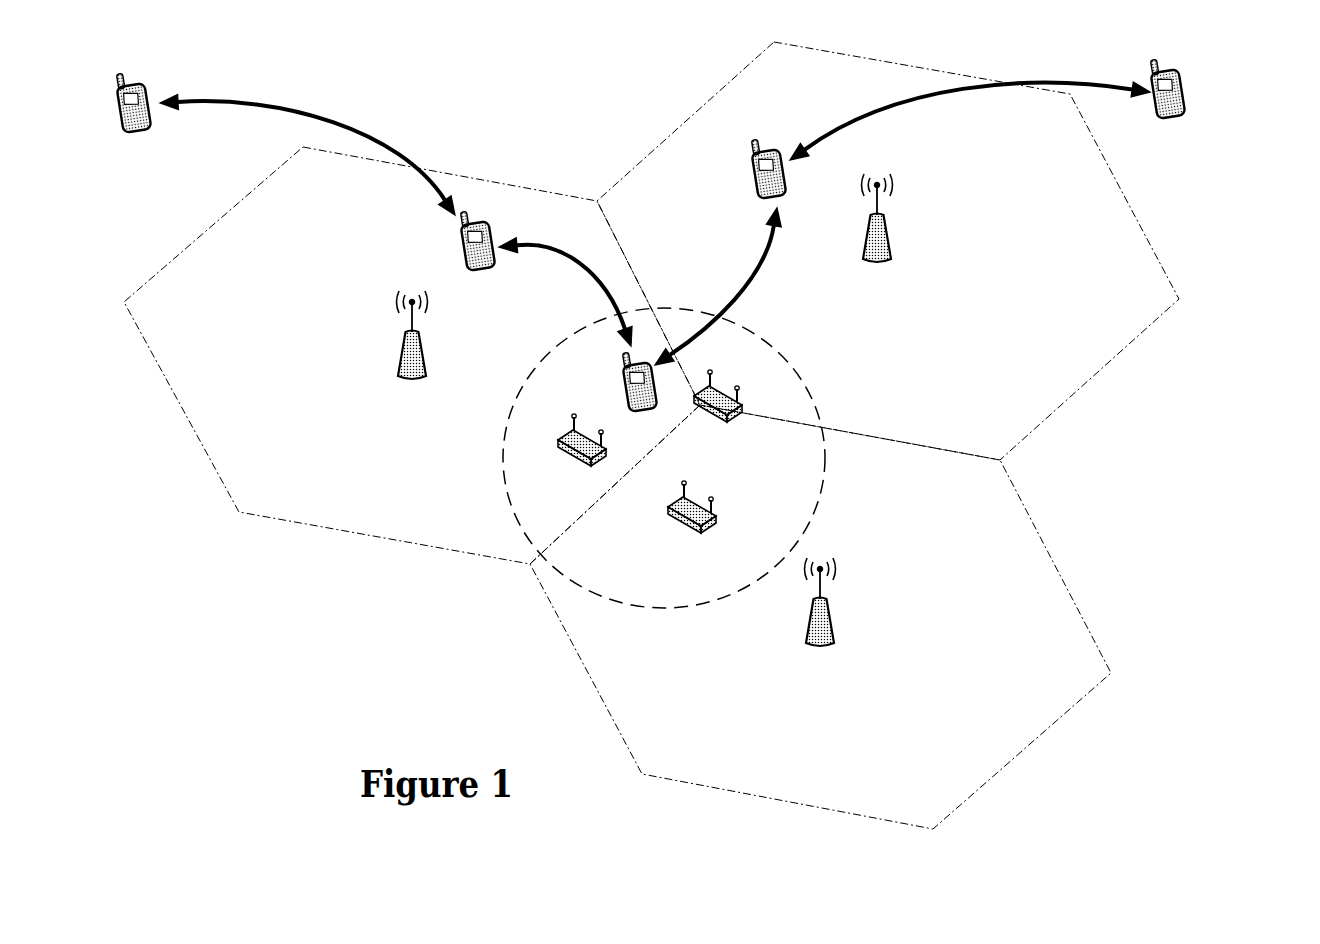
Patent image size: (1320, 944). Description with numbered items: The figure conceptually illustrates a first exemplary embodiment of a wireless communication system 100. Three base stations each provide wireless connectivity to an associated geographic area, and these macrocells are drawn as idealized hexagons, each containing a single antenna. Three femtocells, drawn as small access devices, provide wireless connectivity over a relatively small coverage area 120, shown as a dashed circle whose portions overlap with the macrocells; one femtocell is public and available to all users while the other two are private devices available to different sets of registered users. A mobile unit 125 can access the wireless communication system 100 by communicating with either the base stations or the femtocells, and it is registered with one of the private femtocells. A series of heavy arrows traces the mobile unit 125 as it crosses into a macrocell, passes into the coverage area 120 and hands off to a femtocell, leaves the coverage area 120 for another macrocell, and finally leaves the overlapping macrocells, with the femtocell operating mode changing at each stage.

The wireless communication system 100 is at (1207, 712).
The coverage area 120 is at (648, 612).
The mobile unit 125 is at (137, 135).